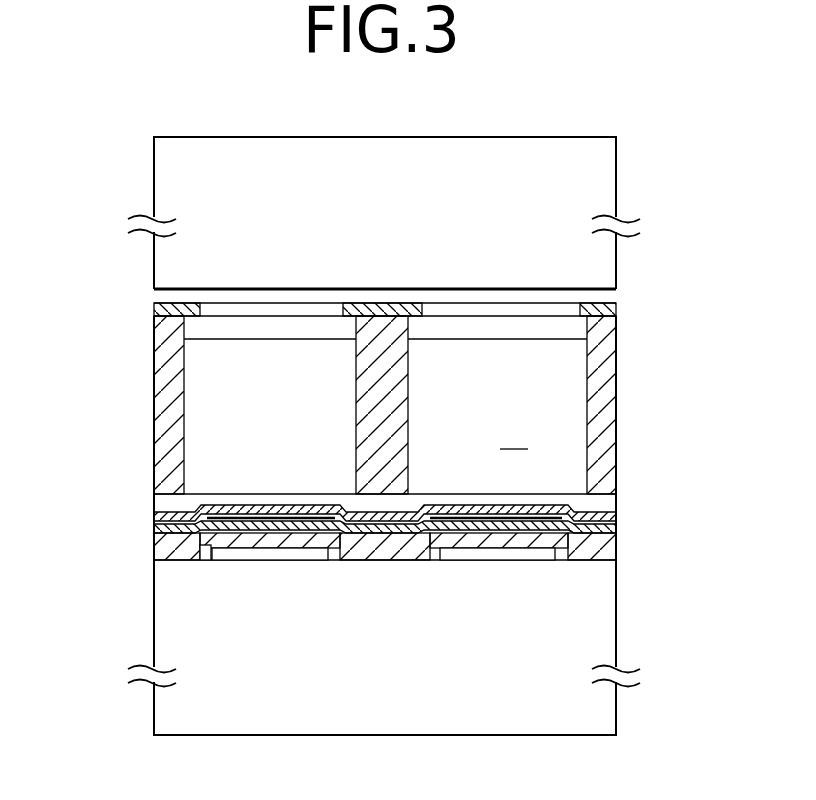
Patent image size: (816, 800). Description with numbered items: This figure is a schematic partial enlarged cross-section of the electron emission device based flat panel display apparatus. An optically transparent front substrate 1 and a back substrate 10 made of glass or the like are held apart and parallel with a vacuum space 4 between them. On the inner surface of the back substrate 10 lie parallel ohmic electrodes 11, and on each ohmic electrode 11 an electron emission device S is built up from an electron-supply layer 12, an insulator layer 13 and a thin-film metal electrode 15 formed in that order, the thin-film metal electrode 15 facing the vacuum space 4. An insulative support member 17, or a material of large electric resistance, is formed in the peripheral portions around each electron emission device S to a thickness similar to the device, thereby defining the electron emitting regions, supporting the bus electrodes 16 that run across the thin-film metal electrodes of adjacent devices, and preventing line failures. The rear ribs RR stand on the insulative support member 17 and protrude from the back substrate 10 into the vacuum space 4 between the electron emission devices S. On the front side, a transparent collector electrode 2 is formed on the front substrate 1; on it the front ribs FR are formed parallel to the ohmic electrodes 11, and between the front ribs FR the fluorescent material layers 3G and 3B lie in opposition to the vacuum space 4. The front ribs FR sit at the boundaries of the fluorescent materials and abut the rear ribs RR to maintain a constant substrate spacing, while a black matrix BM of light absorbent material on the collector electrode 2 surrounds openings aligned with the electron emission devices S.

The front substrate 1 is at (611, 178).
The collector electrode 2 is at (609, 297).
The black matrix BM is at (610, 310).
The fluorescent material layer 3G is at (258, 334).
The fluorescent material layer 3B is at (493, 334).
The front rib FR is at (611, 405).
The vacuum space 4 is at (514, 435).
The rear rib RR is at (611, 497).
The bus electrode 16 is at (157, 514).
The thin-film metal electrode 15 is at (268, 520).
The insulator layer 13 is at (157, 529).
The insulative support member 17 is at (611, 546).
The ohmic electrode 11 is at (250, 560).
The electron-supply layer 12 is at (208, 554).
The back substrate 10 is at (611, 705).
The electron emission device S is at (493, 578).